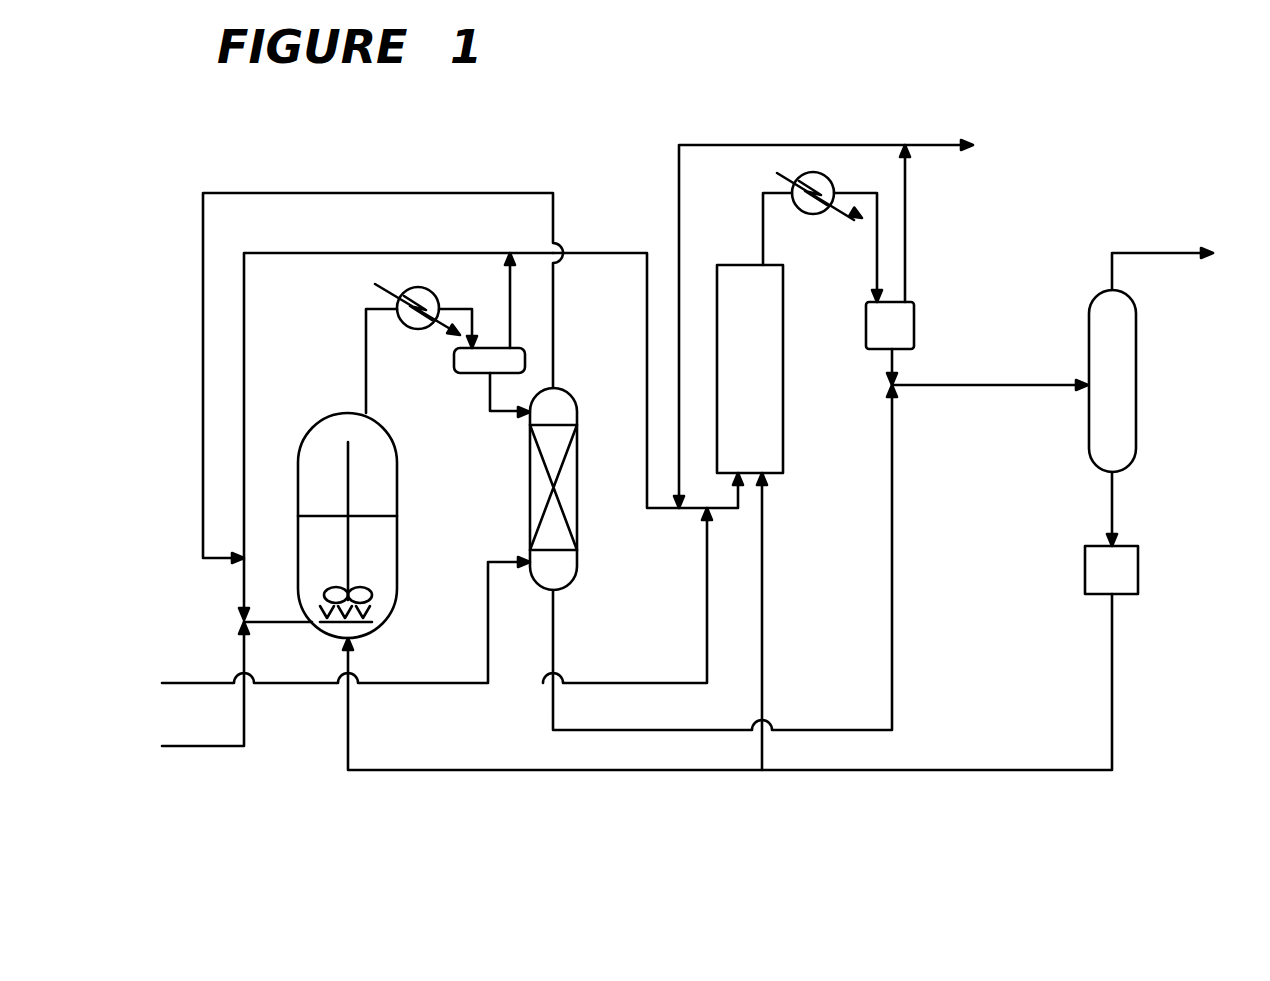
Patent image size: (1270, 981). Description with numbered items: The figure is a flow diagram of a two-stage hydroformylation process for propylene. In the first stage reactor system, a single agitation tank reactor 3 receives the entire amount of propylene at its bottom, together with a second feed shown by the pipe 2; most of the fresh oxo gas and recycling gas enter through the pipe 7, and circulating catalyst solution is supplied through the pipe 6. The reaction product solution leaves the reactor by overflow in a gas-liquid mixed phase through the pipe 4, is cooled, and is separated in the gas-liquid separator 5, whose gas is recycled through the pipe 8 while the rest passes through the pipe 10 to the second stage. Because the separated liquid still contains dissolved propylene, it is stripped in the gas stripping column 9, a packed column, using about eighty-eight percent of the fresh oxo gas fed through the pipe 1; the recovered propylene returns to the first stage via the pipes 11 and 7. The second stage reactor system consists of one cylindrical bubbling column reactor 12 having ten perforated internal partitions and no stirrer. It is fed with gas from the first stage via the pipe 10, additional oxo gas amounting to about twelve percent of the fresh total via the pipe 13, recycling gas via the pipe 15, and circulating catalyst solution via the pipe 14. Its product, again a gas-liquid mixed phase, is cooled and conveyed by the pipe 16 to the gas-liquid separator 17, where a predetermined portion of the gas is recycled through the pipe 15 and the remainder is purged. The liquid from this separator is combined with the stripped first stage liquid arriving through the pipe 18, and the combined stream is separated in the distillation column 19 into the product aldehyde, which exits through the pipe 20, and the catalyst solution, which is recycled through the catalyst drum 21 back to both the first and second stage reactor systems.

The pipe 1 is at (192, 683).
The second feed line 2 is at (190, 746).
The agitation tank reactor 3 is at (400, 470).
The pipe 4 is at (366, 368).
The gas-liquid separator 5 is at (462, 376).
The pipe 6 is at (348, 715).
The pipe 7 is at (244, 578).
The pipe 8 is at (290, 253).
The gas stripping column 9 is at (578, 463).
The pipe 10 is at (612, 252).
The pipe 11 is at (555, 318).
The cylindrical bubbling column reactor 12 is at (786, 400).
The pipe 13 is at (628, 683).
The pipe 14 is at (763, 632).
The pipe 15 is at (680, 215).
The pipe 16 is at (877, 255).
The gas-liquid separator 17 is at (914, 325).
The pipe 18 is at (827, 730).
The distillation column 19 is at (1138, 405).
The pipe 20 is at (1160, 253).
The catalyst drum 21 is at (1138, 574).